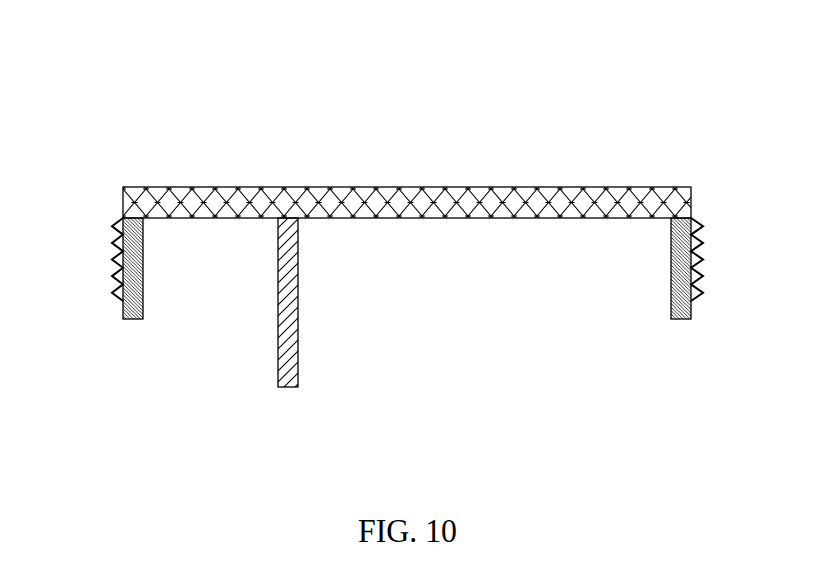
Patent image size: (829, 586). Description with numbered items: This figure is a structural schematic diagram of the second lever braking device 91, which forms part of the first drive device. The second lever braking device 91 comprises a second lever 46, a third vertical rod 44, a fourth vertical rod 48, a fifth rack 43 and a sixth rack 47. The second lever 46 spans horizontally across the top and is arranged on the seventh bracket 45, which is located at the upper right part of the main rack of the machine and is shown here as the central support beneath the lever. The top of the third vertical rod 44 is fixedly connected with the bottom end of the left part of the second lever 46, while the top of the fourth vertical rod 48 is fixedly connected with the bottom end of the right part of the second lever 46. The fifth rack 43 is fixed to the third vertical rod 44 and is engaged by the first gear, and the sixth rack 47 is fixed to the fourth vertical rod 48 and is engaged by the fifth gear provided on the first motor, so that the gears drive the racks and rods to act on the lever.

The second lever braking device 91 is at (235, 143).
The second lever 46 is at (573, 187).
The third vertical rod 44 is at (123, 319).
The fifth rack 43 is at (113, 247).
The seventh bracket 45 is at (278, 387).
The fourth vertical rod 48 is at (691, 319).
The sixth rack 47 is at (703, 247).